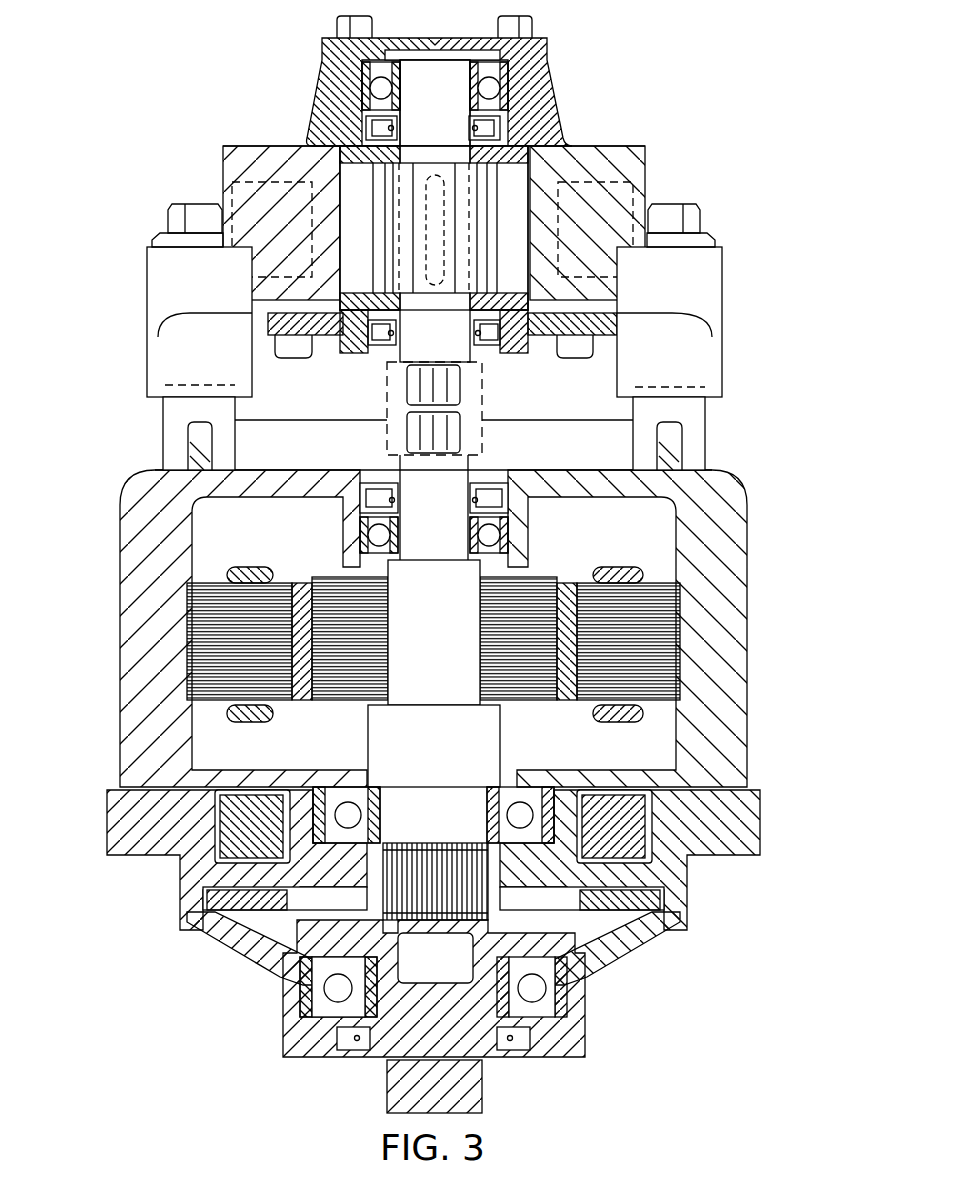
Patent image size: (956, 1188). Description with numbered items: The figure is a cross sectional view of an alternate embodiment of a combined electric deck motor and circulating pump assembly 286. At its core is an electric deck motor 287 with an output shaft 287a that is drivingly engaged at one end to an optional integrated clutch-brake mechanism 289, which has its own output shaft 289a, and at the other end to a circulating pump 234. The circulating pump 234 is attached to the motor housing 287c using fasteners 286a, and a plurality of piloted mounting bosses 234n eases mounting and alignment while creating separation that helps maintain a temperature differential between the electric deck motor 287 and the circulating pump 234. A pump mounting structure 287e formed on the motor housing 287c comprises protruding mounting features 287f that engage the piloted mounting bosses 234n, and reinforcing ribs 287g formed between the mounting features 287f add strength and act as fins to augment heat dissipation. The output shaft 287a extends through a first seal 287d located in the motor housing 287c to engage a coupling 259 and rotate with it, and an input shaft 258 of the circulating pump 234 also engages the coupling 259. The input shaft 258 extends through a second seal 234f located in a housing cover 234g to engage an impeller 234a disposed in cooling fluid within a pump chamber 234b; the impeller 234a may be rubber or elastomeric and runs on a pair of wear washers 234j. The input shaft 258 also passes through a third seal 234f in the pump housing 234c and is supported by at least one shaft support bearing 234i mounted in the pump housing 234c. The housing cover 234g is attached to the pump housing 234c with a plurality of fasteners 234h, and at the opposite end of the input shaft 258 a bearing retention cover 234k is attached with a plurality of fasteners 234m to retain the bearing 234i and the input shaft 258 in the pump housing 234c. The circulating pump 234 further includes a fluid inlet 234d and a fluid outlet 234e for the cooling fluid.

The circulating pump 234 is at (453, 200).
The impeller 234a is at (350, 238).
The pump chamber 234b is at (340, 225).
The pump housing 234c is at (560, 104).
The fluid inlet 234d is at (232, 186).
The fluid outlet 234e is at (633, 186).
The seal 234f is at (500, 128).
The housing cover 234g is at (540, 333).
The fasteners 234h is at (283, 348).
The shaft support bearing 234i is at (380, 86).
The wear washers 234j is at (528, 160).
The bearing retention cover 234k is at (548, 47).
The fasteners 234m is at (338, 30).
The piloted mounting bosses 234n is at (147, 340).
The input shaft 258 is at (455, 339).
The coupling 259 is at (483, 400).
The combined electric deck motor and circulating pump assembly 286 is at (432, 214).
The fasteners 286a is at (168, 220).
The electric deck motor 287 is at (436, 574).
The output shaft 287a is at (462, 639).
The motor housing 287c is at (745, 516).
The first seal 287d is at (503, 490).
The pump mounting structure 287e is at (735, 400).
The mounting features 287f is at (163, 432).
The reinforcing ribs 287g is at (200, 447).
The clutch-brake mechanism 289 is at (433, 950).
The output shaft 289a is at (476, 1088).